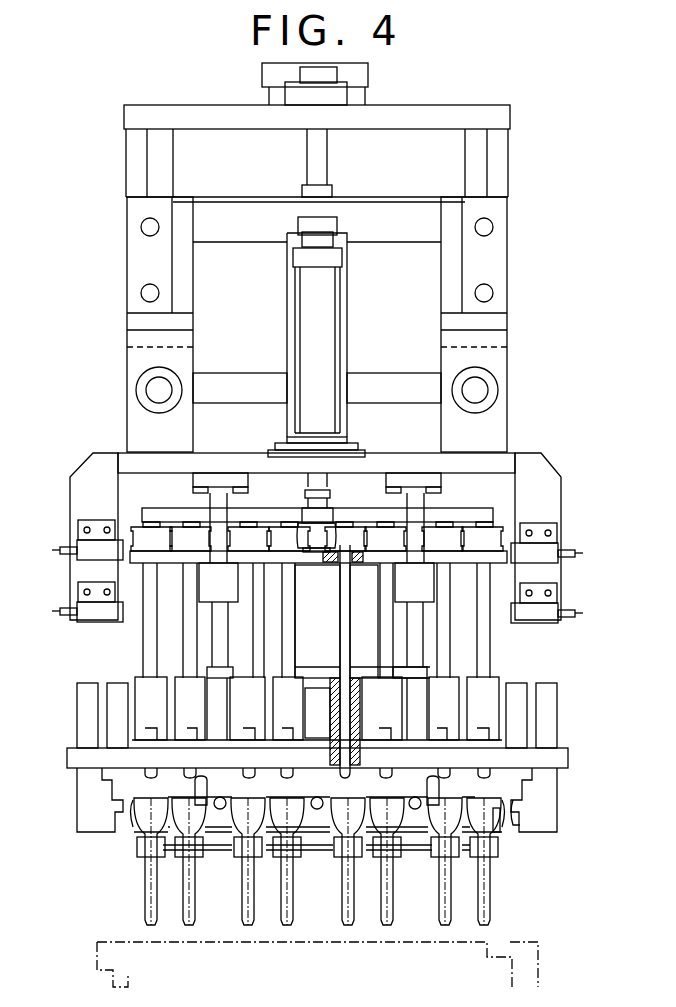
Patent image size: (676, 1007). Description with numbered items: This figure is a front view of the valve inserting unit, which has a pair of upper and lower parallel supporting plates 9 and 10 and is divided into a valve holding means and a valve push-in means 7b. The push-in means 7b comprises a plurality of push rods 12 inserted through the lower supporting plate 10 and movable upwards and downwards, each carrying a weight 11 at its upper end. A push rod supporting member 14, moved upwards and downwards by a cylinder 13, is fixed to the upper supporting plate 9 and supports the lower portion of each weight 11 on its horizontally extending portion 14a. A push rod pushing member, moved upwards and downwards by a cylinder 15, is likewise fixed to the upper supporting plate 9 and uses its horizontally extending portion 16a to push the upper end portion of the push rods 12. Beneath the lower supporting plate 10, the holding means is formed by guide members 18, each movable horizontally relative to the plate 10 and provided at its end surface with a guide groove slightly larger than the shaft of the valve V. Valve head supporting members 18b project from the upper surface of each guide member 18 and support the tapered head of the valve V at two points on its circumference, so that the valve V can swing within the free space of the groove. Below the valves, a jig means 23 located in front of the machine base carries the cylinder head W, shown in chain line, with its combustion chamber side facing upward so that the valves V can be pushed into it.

The valve push-in means 7b is at (136, 655).
The upper supporting plate 9 is at (505, 465).
The lower supporting plate 10 is at (560, 762).
The weight 11 is at (495, 535).
The push rod 12 is at (288, 653).
The cylinder 13 is at (333, 313).
The push rod supporting member 14 is at (177, 576).
The horizontally extending portion 14a is at (128, 560).
The cylinder 15 is at (292, 312).
The horizontally extending portion 16a is at (135, 463).
The guide member 18 is at (493, 860).
The valve head supporting member 18b is at (500, 825).
The jig means 23 is at (133, 855).
The valve V is at (492, 915).
The cylinder head W is at (538, 978).